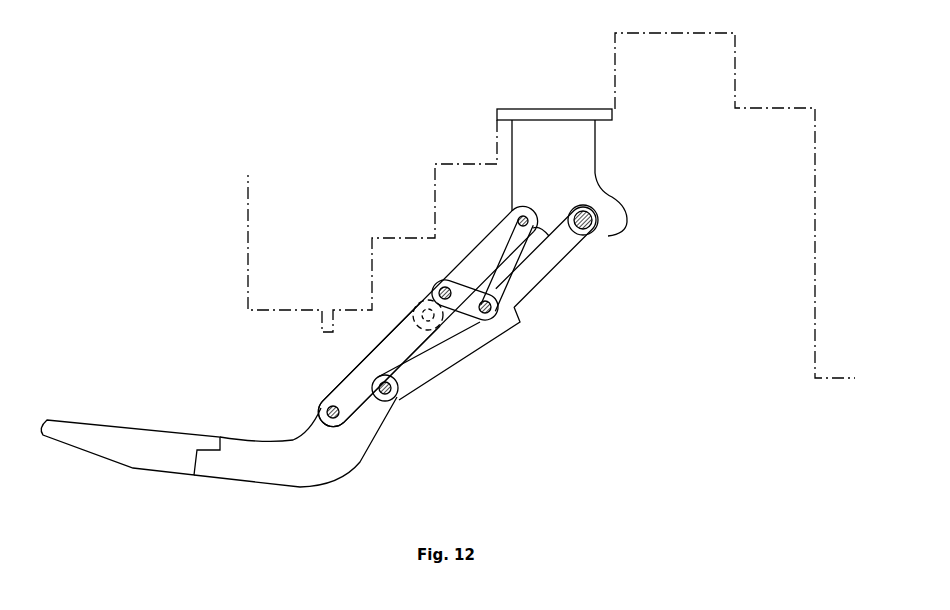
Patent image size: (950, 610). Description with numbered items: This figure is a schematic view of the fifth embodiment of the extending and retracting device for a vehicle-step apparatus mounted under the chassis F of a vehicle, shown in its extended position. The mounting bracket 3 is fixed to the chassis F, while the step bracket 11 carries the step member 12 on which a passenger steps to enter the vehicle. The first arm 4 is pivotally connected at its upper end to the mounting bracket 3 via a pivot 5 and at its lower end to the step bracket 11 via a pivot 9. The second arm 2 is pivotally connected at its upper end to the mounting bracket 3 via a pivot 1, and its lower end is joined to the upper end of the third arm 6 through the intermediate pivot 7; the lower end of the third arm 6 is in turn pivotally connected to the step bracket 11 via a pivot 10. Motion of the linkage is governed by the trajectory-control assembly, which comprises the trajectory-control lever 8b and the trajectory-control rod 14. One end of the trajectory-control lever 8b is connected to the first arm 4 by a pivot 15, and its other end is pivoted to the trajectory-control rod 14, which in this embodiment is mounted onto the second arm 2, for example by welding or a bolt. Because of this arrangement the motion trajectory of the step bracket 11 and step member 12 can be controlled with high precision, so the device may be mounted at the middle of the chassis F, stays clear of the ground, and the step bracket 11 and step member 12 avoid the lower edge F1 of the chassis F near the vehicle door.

The pivot 1 is at (528, 216).
The second arm 2 is at (513, 232).
The mounting bracket 3 is at (555, 132).
The first arm 4 is at (547, 260).
The pivot 5 is at (592, 226).
The third arm 6 is at (352, 392).
The intermediate pivot 7 is at (424, 313).
The trajectory-control lever 8b is at (460, 335).
The pivot 9 is at (391, 393).
The pivot 10 is at (340, 418).
The step bracket 11 is at (273, 467).
The step member 12 is at (127, 452).
The trajectory-control rod 14 is at (440, 287).
The pivot 15 is at (495, 314).
The chassis F is at (410, 132).
The edge of the chassis F1 is at (258, 262).